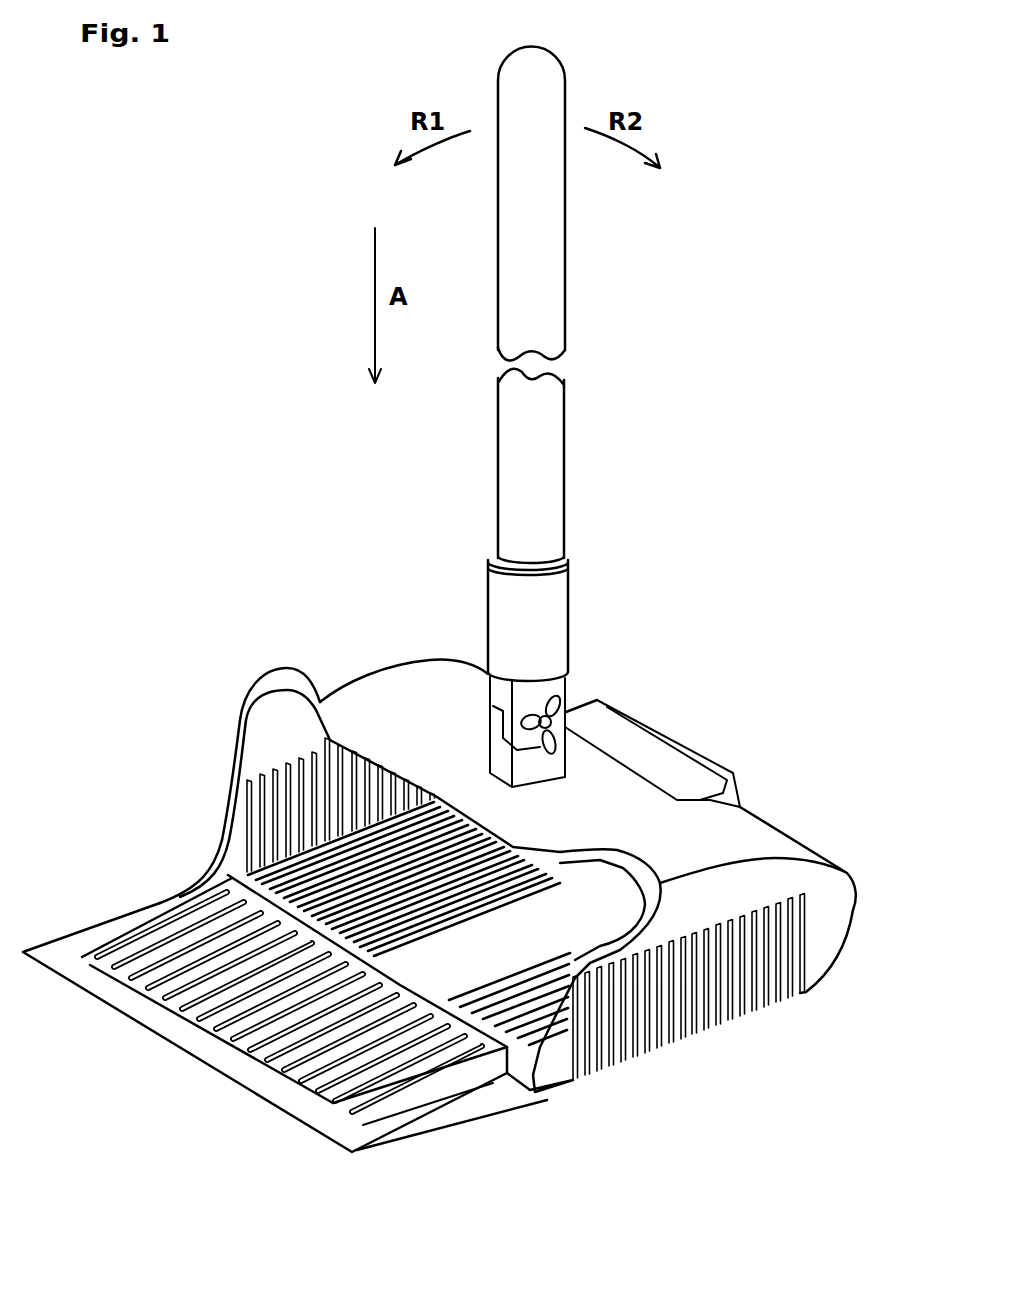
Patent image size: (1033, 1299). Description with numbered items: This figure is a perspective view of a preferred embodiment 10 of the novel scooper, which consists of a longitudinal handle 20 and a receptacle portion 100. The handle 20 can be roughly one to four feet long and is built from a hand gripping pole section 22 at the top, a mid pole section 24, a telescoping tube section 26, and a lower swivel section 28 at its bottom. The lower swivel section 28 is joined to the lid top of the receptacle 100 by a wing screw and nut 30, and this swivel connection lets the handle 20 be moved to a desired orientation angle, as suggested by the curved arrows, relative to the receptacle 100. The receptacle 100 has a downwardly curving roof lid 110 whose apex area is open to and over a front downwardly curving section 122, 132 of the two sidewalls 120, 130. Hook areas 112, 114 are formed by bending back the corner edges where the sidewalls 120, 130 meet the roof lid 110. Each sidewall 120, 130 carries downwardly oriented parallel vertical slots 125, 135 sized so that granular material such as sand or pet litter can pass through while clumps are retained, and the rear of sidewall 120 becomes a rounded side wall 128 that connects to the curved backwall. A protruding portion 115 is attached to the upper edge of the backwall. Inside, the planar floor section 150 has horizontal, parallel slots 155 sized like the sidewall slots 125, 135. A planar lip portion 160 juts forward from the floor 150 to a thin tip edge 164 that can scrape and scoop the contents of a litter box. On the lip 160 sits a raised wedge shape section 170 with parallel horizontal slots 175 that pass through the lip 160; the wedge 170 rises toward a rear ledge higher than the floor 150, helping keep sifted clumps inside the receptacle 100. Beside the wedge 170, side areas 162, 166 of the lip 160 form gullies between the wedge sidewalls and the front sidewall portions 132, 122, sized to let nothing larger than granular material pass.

The scooper embodiment 10 is at (151, 292).
The longitudinal handle 20 is at (554, 322).
The hand gripping pole section 22 is at (545, 75).
The mid pole section 24 is at (536, 478).
The telescoping tube section 26 is at (555, 595).
The lower swivel section 28 is at (518, 720).
The wing screw and nut 30 is at (553, 712).
The receptacle portion 100 is at (742, 846).
The roof lid 110 is at (350, 690).
The hook area 112 is at (503, 757).
The hook area 114 is at (272, 685).
The protruding portion 115 is at (740, 790).
The sidewall 120 is at (737, 895).
The front downwardly curving section 122 is at (555, 1062).
The sidewall slots 125 is at (748, 1013).
The rounded side wall 128 is at (837, 927).
The sidewall 130 is at (280, 736).
The front downwardly curving section 132 is at (228, 862).
The sidewall slots 135 is at (282, 812).
The floor section 150 is at (530, 958).
The floor slots 155 is at (483, 980).
The lip portion 160 is at (165, 1022).
The side area 162 is at (153, 917).
The tip edge 164 is at (180, 1055).
The side area 166 is at (473, 1097).
The wedge shape section 170 is at (300, 1000).
The wedge slots 175 is at (350, 1075).